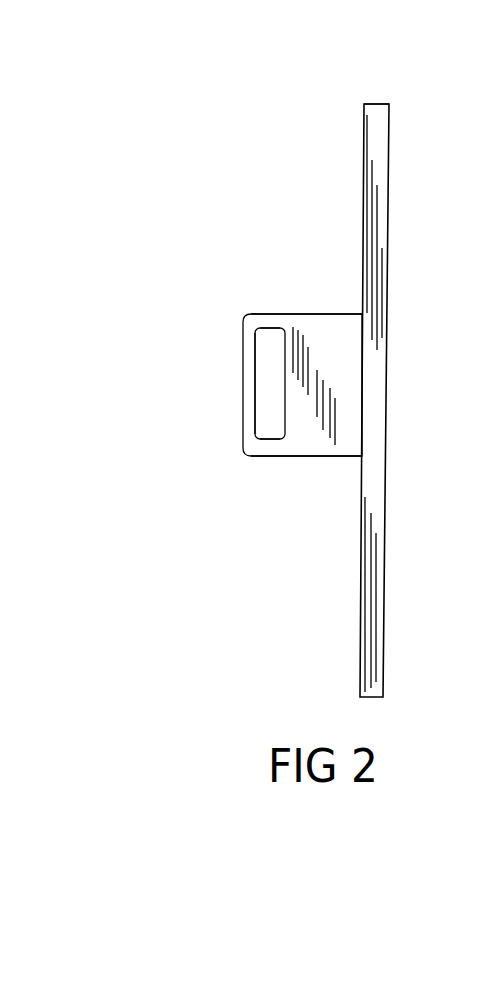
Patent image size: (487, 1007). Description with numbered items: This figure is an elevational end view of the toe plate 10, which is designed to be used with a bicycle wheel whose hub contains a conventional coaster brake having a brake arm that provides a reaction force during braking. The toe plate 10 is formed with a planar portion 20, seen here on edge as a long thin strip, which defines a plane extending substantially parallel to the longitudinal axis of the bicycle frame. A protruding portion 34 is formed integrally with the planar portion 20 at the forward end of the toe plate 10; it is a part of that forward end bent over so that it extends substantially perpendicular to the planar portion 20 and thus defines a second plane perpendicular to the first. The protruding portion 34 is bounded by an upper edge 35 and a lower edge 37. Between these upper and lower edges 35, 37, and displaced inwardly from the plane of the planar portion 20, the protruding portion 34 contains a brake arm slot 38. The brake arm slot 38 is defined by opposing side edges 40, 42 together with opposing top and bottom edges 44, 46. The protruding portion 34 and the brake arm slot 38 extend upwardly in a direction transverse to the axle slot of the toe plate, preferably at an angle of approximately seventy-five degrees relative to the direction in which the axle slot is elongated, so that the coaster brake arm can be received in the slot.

The toe plate 10 is at (425, 137).
The planar portion 20 is at (378, 600).
The protruding portion 34 is at (330, 315).
The upper edge 35 is at (297, 316).
The lower edge 37 is at (322, 457).
The brake arm slot 38 is at (265, 403).
The side edge 40 is at (257, 347).
The side edge 42 is at (285, 377).
The top edge 44 is at (257, 343).
The bottom edge 46 is at (272, 438).